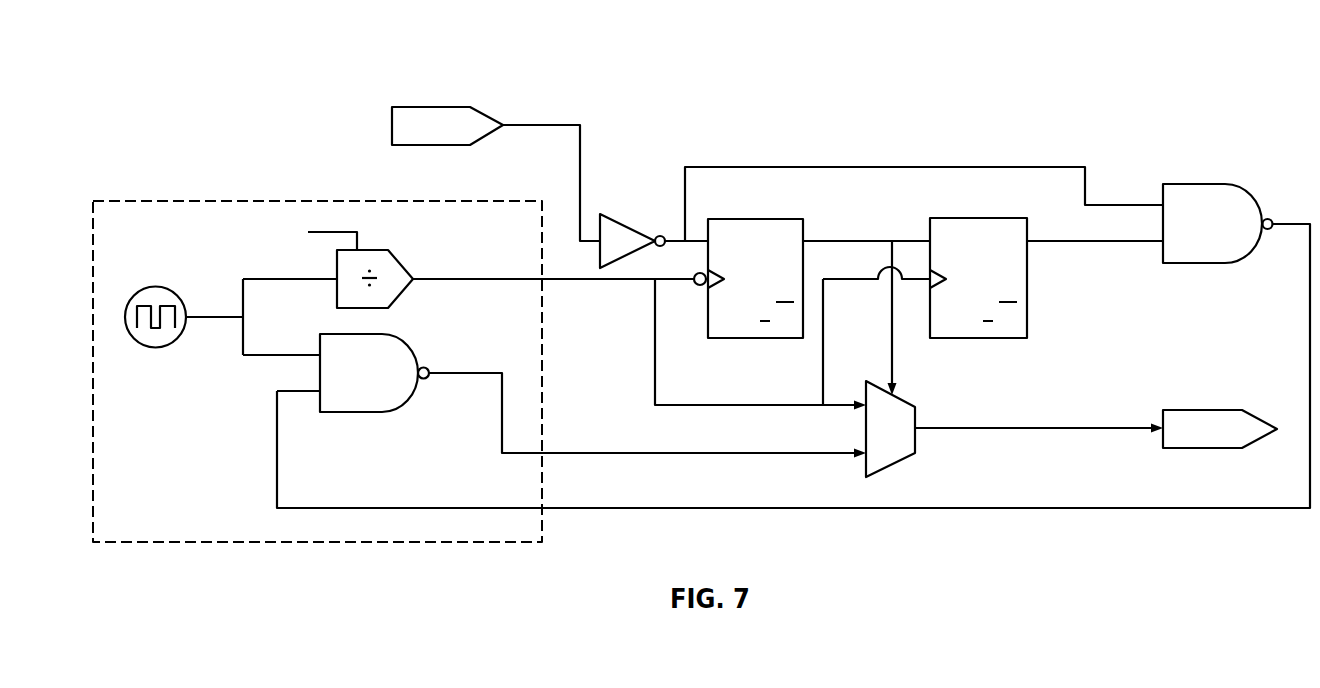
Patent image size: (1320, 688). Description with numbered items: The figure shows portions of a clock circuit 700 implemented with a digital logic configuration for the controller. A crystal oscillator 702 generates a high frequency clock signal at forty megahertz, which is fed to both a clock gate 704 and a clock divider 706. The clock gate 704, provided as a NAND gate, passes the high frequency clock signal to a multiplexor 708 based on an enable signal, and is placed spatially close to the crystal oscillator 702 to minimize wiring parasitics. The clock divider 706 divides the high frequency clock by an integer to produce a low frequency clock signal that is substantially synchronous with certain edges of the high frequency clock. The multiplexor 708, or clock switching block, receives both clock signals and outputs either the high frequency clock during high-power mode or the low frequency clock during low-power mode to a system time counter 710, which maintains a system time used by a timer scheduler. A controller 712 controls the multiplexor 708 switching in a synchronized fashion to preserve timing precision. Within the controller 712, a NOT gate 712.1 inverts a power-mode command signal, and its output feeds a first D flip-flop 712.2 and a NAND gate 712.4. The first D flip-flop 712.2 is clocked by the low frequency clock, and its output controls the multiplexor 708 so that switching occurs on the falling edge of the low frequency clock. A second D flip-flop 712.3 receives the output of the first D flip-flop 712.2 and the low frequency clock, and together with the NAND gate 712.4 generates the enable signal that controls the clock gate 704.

The clock circuit 700 is at (257, 62).
The crystal oscillator 702 is at (157, 347).
The clock gate 704 is at (405, 400).
The clock divider 706 is at (375, 248).
The multiplexor 708 is at (902, 398).
The system time counter 710 is at (1202, 448).
The controller 712 is at (980, 140).
The NOT gate 712.1 is at (620, 220).
The first D flip-flop 712.2 is at (757, 338).
The second D flip-flop 712.3 is at (1027, 290).
The NAND gate 712.4 is at (1192, 183).